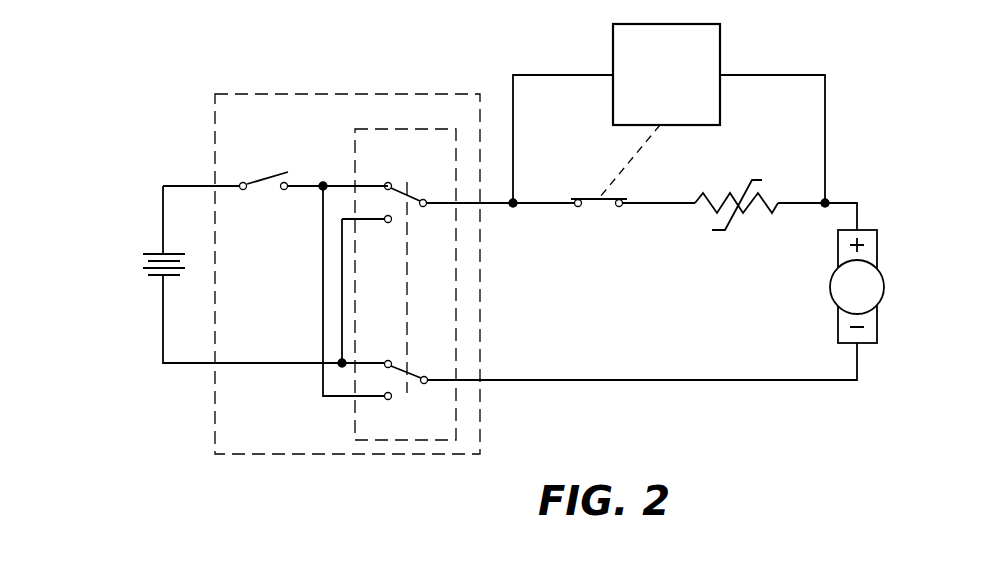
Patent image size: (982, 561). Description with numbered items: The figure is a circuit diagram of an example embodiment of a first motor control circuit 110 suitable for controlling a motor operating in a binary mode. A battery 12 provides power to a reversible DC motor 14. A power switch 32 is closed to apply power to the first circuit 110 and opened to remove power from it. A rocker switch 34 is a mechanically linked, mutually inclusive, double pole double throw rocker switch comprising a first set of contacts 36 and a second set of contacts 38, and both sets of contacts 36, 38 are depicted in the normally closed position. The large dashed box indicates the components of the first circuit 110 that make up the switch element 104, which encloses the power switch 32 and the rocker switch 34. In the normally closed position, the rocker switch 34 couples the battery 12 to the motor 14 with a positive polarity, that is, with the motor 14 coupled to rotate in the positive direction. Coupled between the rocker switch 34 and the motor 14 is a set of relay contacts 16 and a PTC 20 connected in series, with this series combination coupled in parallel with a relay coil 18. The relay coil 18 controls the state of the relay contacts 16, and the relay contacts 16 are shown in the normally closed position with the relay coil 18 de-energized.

The first motor control circuit 110 is at (138, 121).
The battery 12 is at (150, 253).
The switch element 104 is at (282, 126).
The power switch 32 is at (256, 183).
The rocker switch 34 is at (402, 167).
The first set of contacts 36 is at (401, 195).
The second set of contacts 38 is at (400, 371).
The relay coil 18 is at (679, 114).
The relay contacts 16 is at (606, 205).
The PTC 20 is at (751, 210).
The reversible DC motor 14 is at (846, 298).